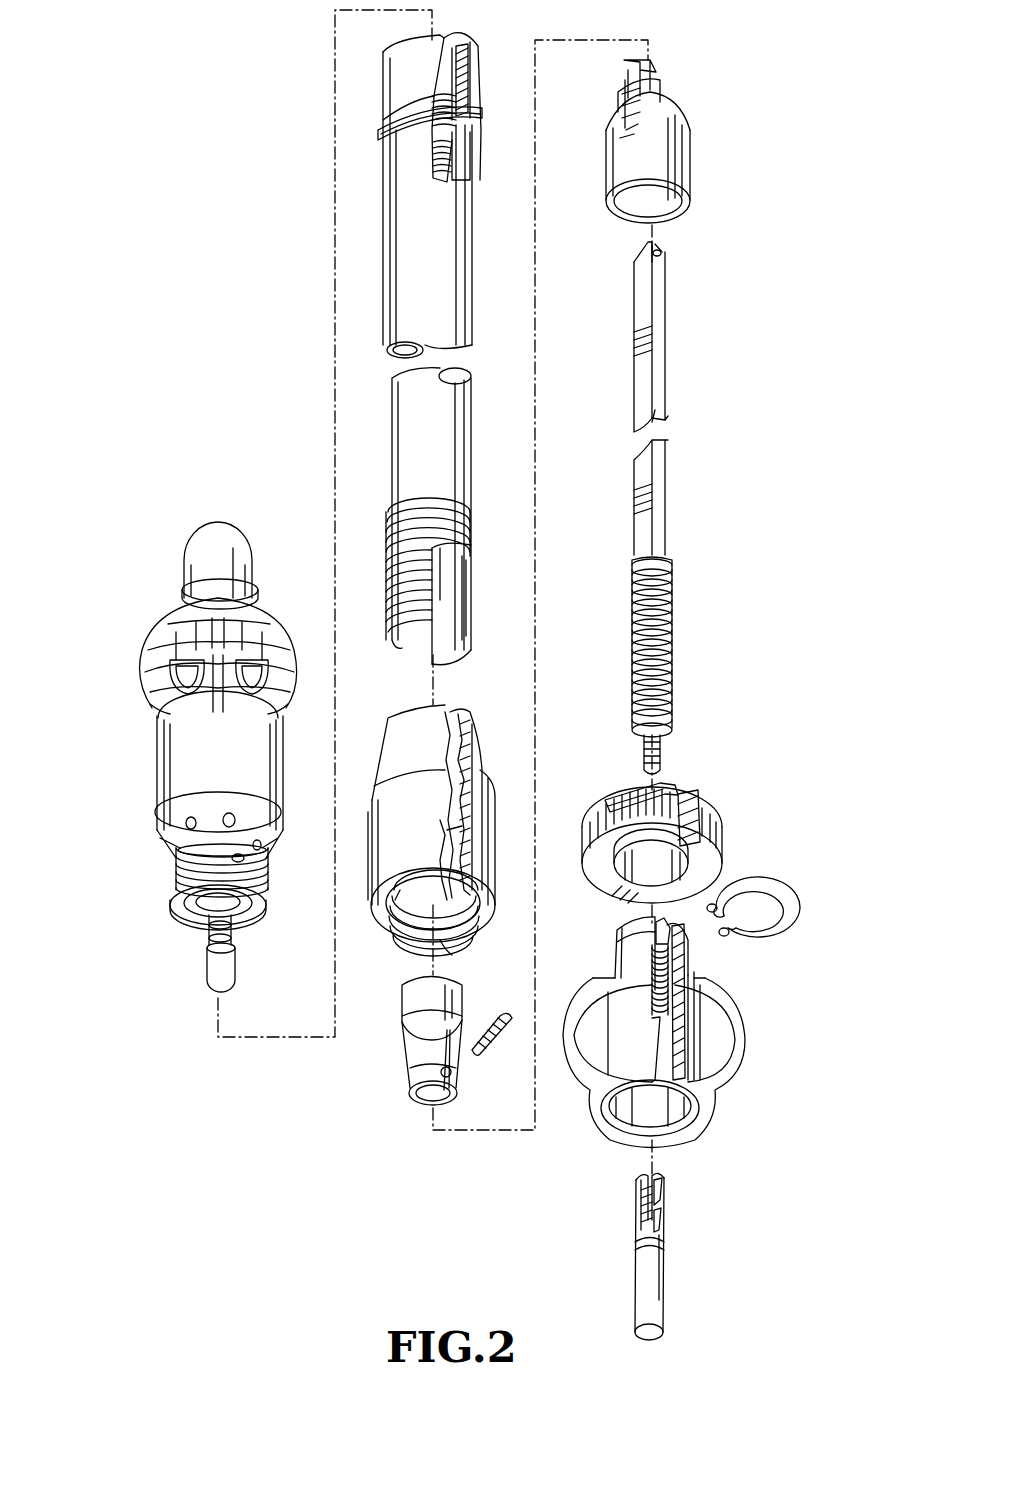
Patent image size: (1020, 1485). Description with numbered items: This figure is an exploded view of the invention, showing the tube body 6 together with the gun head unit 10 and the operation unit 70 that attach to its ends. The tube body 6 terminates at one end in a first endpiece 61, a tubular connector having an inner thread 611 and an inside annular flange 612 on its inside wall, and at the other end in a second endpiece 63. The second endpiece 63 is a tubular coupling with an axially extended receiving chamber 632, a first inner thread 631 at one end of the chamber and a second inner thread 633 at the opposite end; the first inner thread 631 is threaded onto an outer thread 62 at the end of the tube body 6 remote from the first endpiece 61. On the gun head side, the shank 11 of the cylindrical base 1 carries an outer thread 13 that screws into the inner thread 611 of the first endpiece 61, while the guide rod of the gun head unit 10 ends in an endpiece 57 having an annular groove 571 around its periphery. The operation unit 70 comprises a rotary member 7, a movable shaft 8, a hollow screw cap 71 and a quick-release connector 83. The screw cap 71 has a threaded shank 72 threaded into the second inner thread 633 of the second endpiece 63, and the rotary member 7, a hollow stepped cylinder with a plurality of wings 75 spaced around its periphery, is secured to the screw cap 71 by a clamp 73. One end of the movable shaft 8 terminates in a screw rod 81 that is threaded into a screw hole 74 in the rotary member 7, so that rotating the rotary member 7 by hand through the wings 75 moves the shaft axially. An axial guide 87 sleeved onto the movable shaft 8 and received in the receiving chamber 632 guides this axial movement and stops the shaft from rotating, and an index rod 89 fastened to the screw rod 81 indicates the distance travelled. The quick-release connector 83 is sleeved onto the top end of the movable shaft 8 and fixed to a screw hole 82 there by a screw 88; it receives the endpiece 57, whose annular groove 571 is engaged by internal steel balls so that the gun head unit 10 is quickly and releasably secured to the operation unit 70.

The cylindrical base 1 is at (165, 752).
The gun head unit 10 is at (152, 972).
The shank 11 is at (176, 918).
The outer thread 13 is at (180, 874).
The endpiece 57 is at (232, 978).
The annular groove 571 is at (232, 934).
The tube body 6 is at (462, 456).
The first endpiece 61 is at (472, 108).
The inner thread 611 is at (462, 50).
The inside annular flange 612 is at (405, 124).
The outer thread 62 is at (392, 592).
The second endpiece 63 is at (480, 835).
The first inner thread 631 is at (460, 720).
The receiving chamber 632 is at (450, 810).
The second inner thread 633 is at (450, 938).
The quick-release connector 83 is at (406, 994).
The screw 88 is at (488, 1044).
The axial guide 87 is at (680, 108).
The screw hole 82 is at (664, 252).
The movable shaft 8 is at (665, 366).
The screw rod 81 is at (670, 648).
The rotary member 7 is at (705, 990).
The operation unit 70 is at (733, 1094).
The hollow screw cap 71 is at (708, 838).
The threaded shank 72 is at (618, 800).
The clamp 73 is at (770, 902).
The screw hole 74 is at (664, 960).
The wings 75 is at (716, 1043).
The index rod 89 is at (664, 1260).